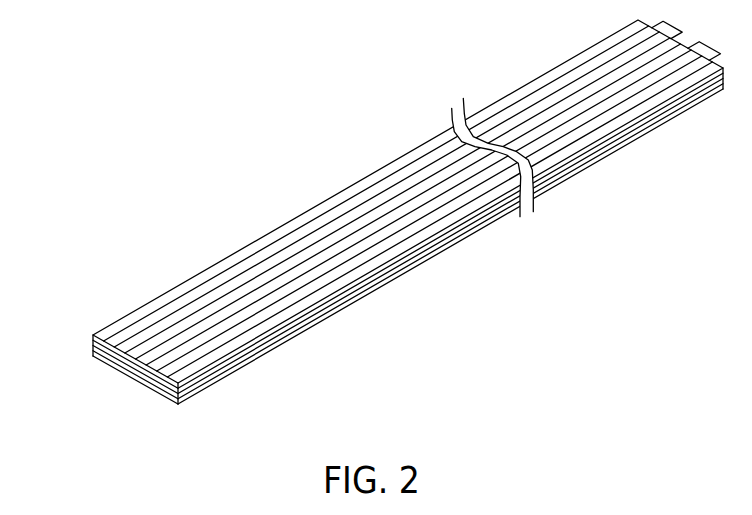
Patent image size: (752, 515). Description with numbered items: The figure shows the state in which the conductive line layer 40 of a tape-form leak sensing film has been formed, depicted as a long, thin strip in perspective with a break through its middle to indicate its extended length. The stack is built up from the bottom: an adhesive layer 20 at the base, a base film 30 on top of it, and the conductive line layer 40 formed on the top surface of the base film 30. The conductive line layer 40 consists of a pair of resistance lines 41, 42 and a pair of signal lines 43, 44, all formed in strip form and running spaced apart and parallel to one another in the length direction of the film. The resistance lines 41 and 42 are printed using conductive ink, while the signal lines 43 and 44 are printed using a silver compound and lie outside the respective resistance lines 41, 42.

The adhesive layer 20 is at (110, 360).
The base film 30 is at (95, 348).
The conductive line layer 40 is at (93, 337).
The resistance line 41 is at (307, 247).
The resistance line 42 is at (363, 236).
The signal line 43 is at (372, 190).
The signal line 44 is at (437, 216).